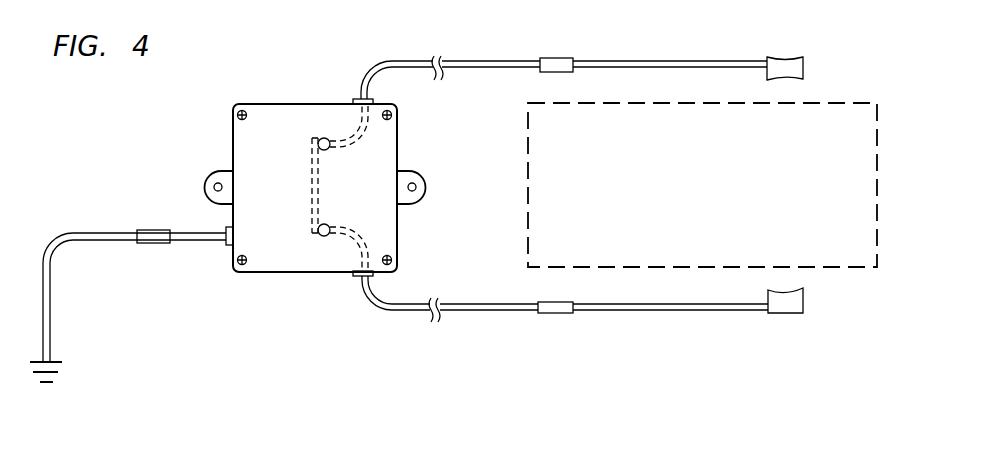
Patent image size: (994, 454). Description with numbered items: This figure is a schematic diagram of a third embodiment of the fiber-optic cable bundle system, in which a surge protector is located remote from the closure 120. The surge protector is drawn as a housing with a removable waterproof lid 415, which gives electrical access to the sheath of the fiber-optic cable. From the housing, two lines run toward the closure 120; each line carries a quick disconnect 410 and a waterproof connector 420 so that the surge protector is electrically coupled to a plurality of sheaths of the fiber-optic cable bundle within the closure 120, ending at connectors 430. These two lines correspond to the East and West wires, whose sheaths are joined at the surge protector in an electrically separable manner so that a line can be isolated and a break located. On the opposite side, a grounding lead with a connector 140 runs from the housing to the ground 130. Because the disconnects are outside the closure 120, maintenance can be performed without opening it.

The quick disconnect 410 is at (472, 151).
The removable waterproof lid 415 is at (242, 160).
The waterproof connector 420 is at (558, 313).
The connector plug 430 is at (790, 57).
The closure 120 is at (830, 102).
The ground cable connector 140 is at (152, 230).
The ground 130 is at (57, 362).